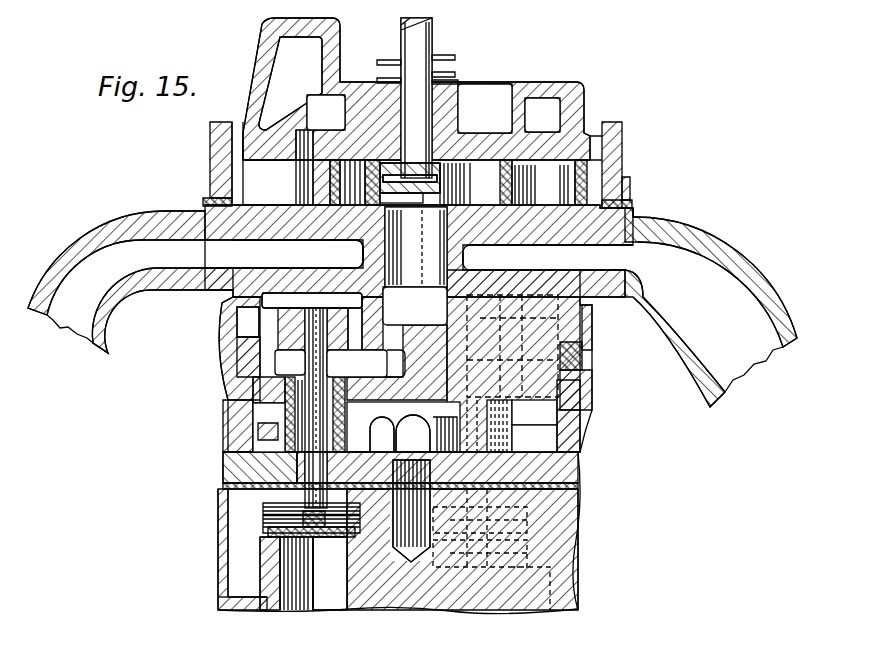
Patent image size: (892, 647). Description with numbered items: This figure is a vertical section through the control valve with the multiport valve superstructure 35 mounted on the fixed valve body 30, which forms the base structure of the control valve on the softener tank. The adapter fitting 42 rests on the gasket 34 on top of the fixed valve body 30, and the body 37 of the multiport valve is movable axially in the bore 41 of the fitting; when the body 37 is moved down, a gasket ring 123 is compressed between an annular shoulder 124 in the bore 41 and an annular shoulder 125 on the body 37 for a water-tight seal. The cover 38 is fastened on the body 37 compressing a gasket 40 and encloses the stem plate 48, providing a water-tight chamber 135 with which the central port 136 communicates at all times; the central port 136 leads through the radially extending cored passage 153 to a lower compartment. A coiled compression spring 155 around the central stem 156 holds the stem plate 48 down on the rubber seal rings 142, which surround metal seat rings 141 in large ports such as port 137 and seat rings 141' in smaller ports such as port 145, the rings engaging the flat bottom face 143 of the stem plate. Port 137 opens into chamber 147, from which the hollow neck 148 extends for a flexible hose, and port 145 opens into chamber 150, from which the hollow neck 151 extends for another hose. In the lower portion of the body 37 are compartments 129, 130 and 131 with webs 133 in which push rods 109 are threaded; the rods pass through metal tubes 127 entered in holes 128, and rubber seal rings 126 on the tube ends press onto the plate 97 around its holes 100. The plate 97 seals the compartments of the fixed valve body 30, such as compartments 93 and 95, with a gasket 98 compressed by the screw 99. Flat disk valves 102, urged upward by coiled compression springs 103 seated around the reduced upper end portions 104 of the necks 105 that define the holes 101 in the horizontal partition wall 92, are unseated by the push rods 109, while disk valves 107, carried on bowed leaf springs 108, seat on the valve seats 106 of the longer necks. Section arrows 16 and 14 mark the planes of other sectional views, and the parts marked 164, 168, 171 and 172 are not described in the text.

The central stem 156 is at (435, 30).
The coiled compression spring 155 is at (458, 62).
The stem plate 48 is at (552, 82).
The cover 38 is at (622, 130).
The control valve superstructure 35 is at (633, 190).
The gasket 40 is at (632, 205).
The passage 172 is at (290, 120).
The water-tight chamber 135 is at (238, 165).
The cavity 164 is at (312, 80).
The port 171 is at (339, 124).
The rubber seal ring 142 is at (505, 130).
The window 168 is at (555, 126).
The flat bottom face 143 is at (269, 182).
The port 145 is at (346, 182).
The port 137 is at (560, 202).
The chamber 150 is at (306, 264).
The metal seat ring 141' is at (345, 254).
The central port 136 is at (428, 250).
The cored passage 153 is at (428, 315).
The metal seat ring 141 is at (511, 257).
The chamber 147 is at (613, 267).
The hollow neck 151 is at (110, 351).
The section line 16- 16 is at (62, 248).
The section line 14- 14 is at (180, 487).
The compartment 131 is at (302, 373).
The compartment 130 is at (355, 373).
The holes 128 is at (383, 364).
The screw 99 is at (392, 415).
The push rods 109 is at (258, 437).
The holes 100 is at (237, 480).
The plate 97 is at (235, 460).
The gasket 98 is at (226, 486).
The body 37 is at (268, 324).
The webs 133 is at (292, 325).
The gasket ring 123 is at (250, 360).
The metal tubes 127 is at (253, 403).
The rubber seal rings 126 is at (260, 422).
The annular shoulder 125 is at (590, 324).
The bore 41 is at (583, 346).
The annular shoulder 124 is at (594, 385).
The adapter fitting 42 is at (588, 410).
The compartment 129 is at (582, 420).
The gasket 34 is at (582, 452).
The hollow neck 148 is at (703, 397).
The compartment 95 is at (240, 514).
The flat disk valves 102 is at (275, 505).
The bowed leaf springs 108 is at (313, 497).
The coiled compression springs 103 is at (267, 524).
The necks 105 is at (262, 553).
The holes 101 is at (268, 568).
The reduced upper end portions 104 is at (297, 573).
The flat disk valves 107 is at (333, 537).
The valve seats 106 is at (326, 596).
The horizontal partition wall 92 is at (246, 611).
The compartment 93 is at (598, 505).
The fixed valve body 30 is at (600, 567).